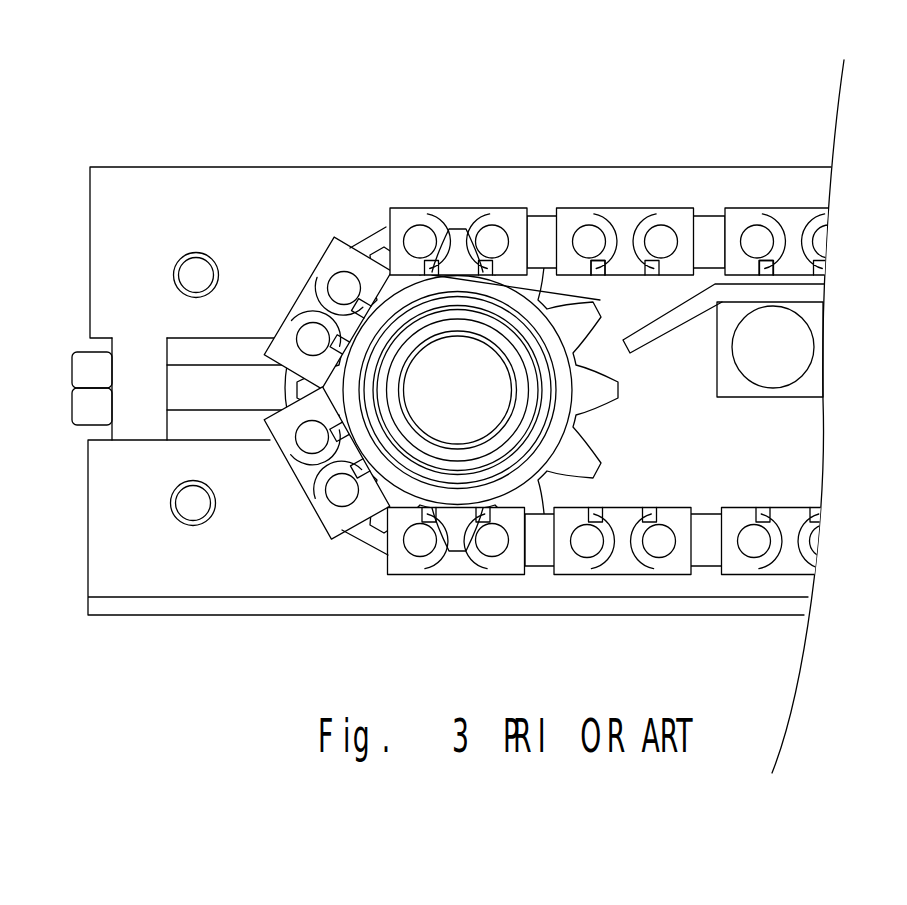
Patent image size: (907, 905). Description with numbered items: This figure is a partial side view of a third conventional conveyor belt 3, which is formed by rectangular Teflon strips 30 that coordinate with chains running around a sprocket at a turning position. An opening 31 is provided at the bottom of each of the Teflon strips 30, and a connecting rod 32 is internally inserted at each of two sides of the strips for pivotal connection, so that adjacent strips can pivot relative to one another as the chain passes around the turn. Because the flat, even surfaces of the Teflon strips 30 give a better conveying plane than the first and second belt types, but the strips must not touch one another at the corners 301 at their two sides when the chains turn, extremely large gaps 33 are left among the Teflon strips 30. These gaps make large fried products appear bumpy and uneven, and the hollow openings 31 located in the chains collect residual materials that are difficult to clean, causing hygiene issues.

The conveyor belt 3 is at (530, 137).
The Teflon strips 30 is at (612, 205).
The corners 301 is at (390, 275).
The opening 31 is at (628, 270).
The connecting rod 32 is at (493, 240).
The gaps 33 is at (545, 209).